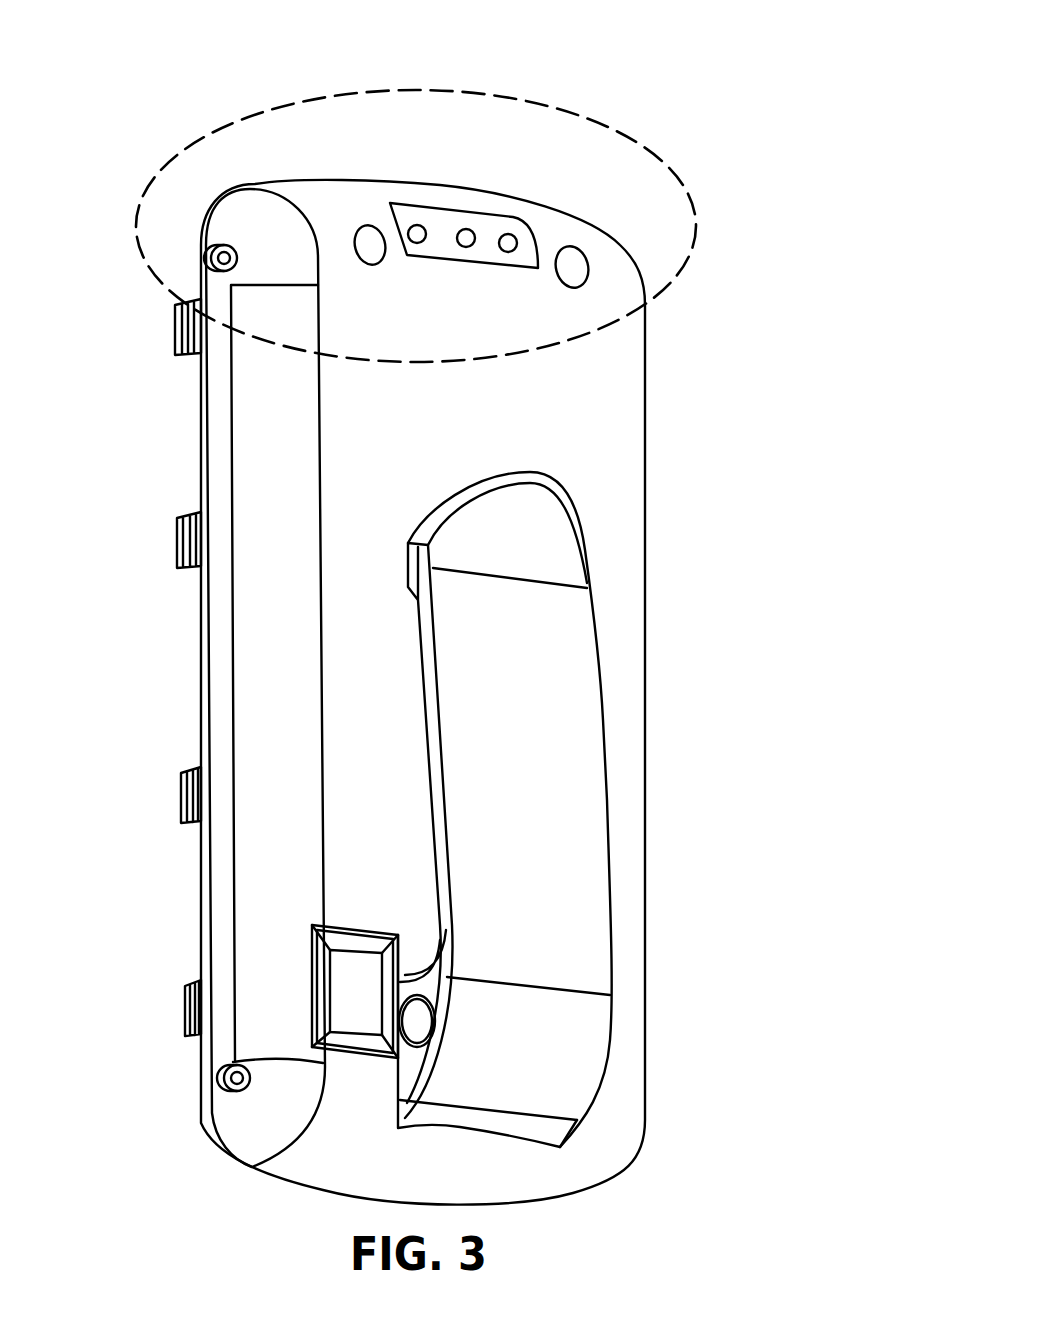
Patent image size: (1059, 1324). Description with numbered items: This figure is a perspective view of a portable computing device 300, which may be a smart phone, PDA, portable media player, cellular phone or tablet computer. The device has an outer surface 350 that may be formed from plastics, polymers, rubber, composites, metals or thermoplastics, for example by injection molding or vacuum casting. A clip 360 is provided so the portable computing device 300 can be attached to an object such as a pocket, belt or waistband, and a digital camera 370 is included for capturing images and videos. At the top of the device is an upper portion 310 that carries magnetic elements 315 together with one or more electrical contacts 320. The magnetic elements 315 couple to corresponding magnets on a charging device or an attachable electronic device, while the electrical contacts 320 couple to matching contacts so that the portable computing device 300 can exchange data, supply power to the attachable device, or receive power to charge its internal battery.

The portable computing device 300 is at (740, 68).
The upper portion 310 is at (525, 100).
The magnetic elements 315 is at (367, 224).
The electrical contacts 320 is at (508, 234).
The outer surface 350 is at (583, 372).
The clip 360 is at (567, 900).
The digital camera 370 is at (347, 995).